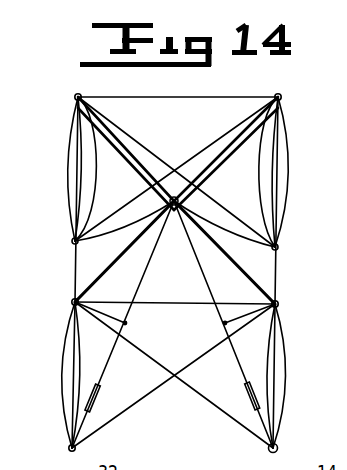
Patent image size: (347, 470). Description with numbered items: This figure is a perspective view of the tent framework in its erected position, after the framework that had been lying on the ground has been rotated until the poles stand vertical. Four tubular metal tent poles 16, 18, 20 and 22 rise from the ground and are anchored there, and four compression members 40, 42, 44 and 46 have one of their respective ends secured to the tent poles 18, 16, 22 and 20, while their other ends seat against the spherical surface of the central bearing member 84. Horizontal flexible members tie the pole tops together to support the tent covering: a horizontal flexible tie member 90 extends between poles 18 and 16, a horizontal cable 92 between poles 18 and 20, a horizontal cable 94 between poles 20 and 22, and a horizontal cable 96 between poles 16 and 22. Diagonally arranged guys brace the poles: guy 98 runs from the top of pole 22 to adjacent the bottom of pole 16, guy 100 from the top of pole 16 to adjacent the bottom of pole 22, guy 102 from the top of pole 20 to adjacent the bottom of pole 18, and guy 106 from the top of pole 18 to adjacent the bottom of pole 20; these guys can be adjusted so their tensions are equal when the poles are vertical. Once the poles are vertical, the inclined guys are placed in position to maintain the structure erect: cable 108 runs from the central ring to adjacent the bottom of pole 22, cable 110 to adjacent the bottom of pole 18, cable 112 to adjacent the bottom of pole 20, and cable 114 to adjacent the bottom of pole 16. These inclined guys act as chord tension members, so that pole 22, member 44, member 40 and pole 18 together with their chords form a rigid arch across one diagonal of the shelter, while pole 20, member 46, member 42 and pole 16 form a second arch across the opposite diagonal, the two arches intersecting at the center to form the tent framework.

The horizontal cable 96 is at (171, 95).
The tent pole 22 is at (68, 170).
The inclined guy member 108 is at (94, 179).
The tent pole 16 is at (284, 183).
The inclined guy member 114 is at (258, 182).
The horizontal cable 94 is at (73, 275).
The horizontal flexible tie member 90 is at (279, 272).
The compression member 44 is at (131, 147).
The compression member 42 is at (227, 143).
The diagonally arranged guy 98 is at (160, 152).
The diagonally arranged guy 100 is at (178, 172).
The compression member 46 is at (126, 235).
The compression member 40 is at (237, 237).
The bearing member 84 is at (177, 212).
The horizontal cable 92 is at (199, 305).
The inclined guy member 112 is at (128, 316).
The inclined guy member 110 is at (200, 266).
The tent pole 20 is at (63, 390).
The tent pole 18 is at (283, 387).
The diagonally arranged guy 106 is at (112, 420).
The diagonally arranged guy 102 is at (221, 411).